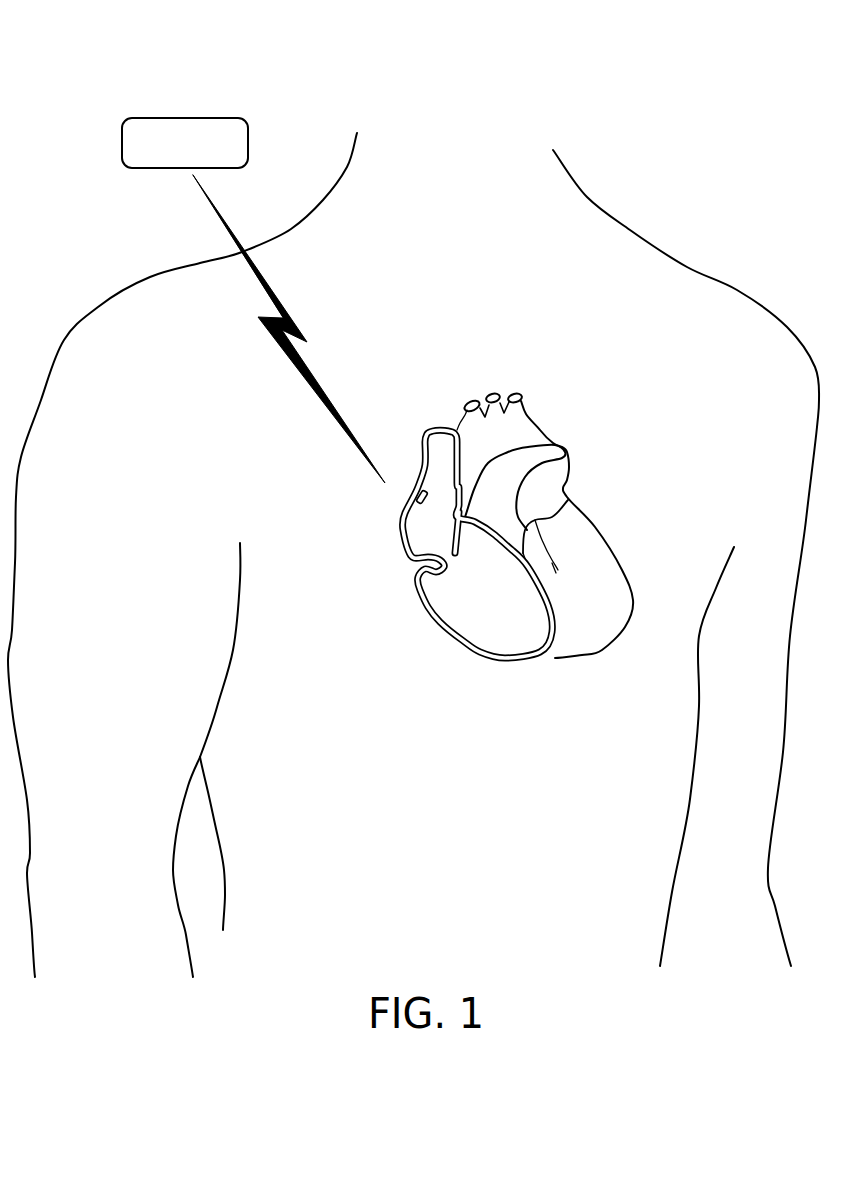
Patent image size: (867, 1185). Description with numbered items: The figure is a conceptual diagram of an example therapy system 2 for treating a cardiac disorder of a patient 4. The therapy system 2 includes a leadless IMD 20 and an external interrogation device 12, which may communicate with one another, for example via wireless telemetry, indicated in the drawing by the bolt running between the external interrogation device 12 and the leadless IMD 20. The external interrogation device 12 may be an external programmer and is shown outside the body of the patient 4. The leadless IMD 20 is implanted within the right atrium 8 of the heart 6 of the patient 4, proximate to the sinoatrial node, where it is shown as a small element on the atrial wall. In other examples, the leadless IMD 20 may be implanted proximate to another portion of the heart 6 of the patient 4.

The therapy system 2 is at (538, 70).
The patient 4 is at (692, 266).
The heart 6 is at (597, 686).
The right atrium 8 is at (418, 523).
The external interrogation device 12 is at (194, 151).
The leadless IMD 20 is at (412, 493).